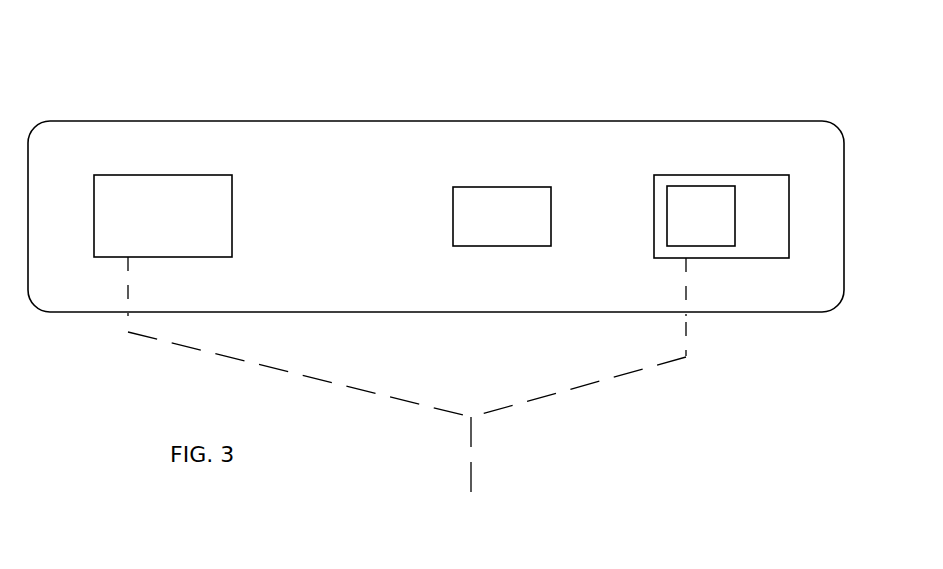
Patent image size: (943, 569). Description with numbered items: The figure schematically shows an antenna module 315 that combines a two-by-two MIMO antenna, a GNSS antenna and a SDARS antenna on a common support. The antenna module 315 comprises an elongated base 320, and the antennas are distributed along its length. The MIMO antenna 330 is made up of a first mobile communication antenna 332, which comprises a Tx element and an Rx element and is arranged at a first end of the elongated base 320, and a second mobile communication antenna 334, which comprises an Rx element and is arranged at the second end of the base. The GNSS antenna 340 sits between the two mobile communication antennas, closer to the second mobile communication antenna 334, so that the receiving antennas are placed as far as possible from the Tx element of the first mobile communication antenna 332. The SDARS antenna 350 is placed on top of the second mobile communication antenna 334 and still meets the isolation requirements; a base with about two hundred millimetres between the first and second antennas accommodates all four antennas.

The antenna module 315 is at (295, 105).
The elongated base 320 is at (466, 120).
The 2×2 MIMO antenna 330 is at (407, 396).
The first mobile communication antenna 332 is at (229, 194).
The second mobile communication antenna 334 is at (790, 202).
The GNSS antenna 340 is at (515, 198).
The SDARS antenna 350 is at (699, 185).